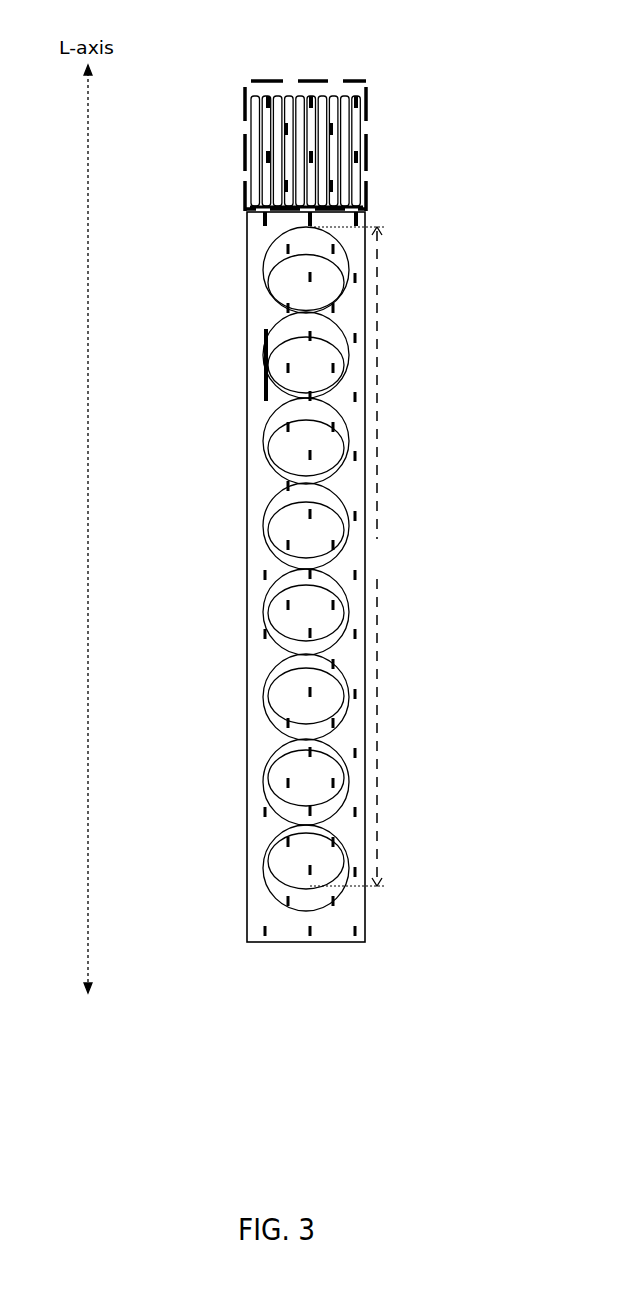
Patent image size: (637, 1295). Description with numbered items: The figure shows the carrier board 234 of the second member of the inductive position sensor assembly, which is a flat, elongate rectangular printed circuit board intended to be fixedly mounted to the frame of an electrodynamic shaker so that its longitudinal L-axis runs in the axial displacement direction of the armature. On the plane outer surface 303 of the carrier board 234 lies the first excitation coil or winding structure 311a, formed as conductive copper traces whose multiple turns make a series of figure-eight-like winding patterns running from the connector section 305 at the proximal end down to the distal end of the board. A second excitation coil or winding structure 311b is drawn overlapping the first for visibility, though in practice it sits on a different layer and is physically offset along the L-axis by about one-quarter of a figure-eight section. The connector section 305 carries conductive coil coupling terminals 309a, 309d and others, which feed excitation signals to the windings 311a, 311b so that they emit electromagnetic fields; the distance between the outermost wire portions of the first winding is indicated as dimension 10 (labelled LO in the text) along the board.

The carrier board 234 is at (309, 516).
The plane outer surface 303 is at (358, 898).
The connector section 305 is at (331, 413).
The conductive coil coupling terminal 309a is at (263, 100).
The conductive coil coupling terminal 309d is at (307, 96).
The first excitation coil or winding structure 311a is at (265, 830).
The second excitation coil or winding structure 311b is at (265, 872).
The length dimension 10 is at (357, 556).